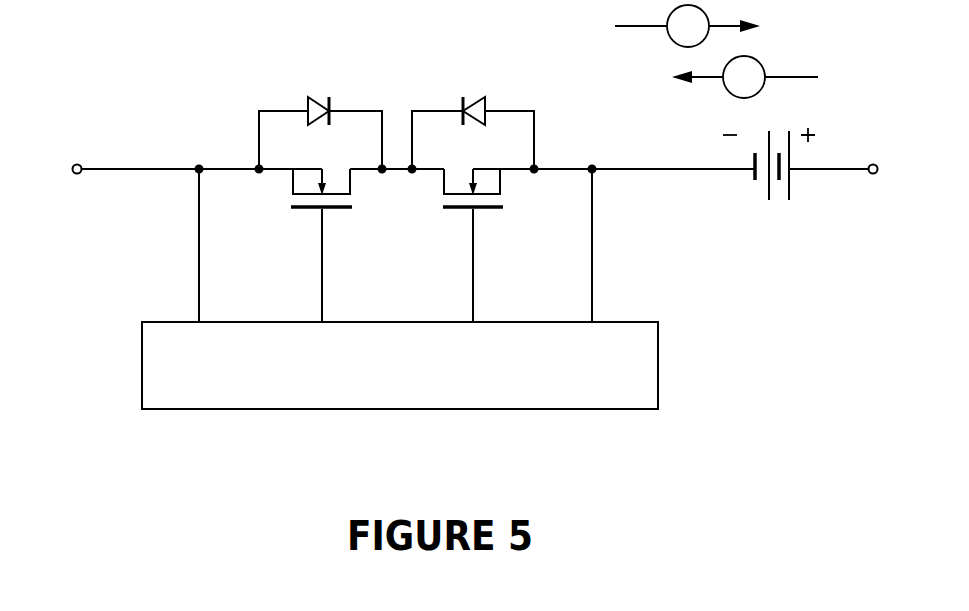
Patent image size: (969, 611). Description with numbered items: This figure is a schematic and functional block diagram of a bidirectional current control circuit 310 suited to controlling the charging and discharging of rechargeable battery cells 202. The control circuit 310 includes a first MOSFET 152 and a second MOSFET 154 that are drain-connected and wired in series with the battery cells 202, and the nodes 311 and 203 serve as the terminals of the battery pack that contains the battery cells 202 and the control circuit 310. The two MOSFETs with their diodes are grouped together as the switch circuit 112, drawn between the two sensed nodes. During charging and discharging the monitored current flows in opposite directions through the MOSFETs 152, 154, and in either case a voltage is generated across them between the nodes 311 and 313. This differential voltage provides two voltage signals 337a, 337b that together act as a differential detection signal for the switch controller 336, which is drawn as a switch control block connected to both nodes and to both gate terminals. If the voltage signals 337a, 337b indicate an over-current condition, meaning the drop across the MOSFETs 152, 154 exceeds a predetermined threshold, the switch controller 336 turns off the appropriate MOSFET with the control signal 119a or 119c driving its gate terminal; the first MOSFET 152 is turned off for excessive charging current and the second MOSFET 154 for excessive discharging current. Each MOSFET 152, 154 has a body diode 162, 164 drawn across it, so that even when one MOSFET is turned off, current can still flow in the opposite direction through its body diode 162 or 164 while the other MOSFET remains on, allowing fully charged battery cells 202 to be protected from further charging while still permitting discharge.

The current control circuit 310 is at (690, 446).
The node 311 is at (105, 170).
The node 313 is at (615, 168).
The voltage signal 337a is at (123, 244).
The voltage signal 337b is at (664, 245).
The switch circuit 112 is at (404, 252).
The first MOSFET 152 is at (298, 169).
The second MOSFET 154 is at (492, 168).
The body diode 162 is at (318, 98).
The body diode 164 is at (474, 98).
The control signal 119a is at (322, 243).
The control signal 119c is at (474, 243).
The switch controller 336 is at (142, 359).
The battery cells 202 is at (790, 186).
The node 203 is at (846, 166).